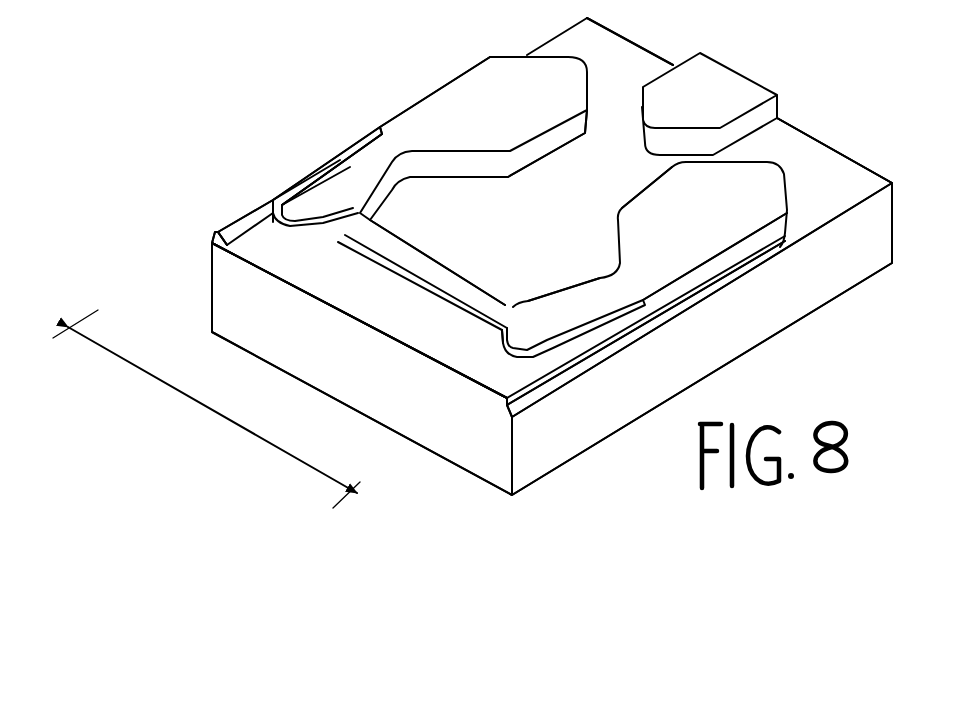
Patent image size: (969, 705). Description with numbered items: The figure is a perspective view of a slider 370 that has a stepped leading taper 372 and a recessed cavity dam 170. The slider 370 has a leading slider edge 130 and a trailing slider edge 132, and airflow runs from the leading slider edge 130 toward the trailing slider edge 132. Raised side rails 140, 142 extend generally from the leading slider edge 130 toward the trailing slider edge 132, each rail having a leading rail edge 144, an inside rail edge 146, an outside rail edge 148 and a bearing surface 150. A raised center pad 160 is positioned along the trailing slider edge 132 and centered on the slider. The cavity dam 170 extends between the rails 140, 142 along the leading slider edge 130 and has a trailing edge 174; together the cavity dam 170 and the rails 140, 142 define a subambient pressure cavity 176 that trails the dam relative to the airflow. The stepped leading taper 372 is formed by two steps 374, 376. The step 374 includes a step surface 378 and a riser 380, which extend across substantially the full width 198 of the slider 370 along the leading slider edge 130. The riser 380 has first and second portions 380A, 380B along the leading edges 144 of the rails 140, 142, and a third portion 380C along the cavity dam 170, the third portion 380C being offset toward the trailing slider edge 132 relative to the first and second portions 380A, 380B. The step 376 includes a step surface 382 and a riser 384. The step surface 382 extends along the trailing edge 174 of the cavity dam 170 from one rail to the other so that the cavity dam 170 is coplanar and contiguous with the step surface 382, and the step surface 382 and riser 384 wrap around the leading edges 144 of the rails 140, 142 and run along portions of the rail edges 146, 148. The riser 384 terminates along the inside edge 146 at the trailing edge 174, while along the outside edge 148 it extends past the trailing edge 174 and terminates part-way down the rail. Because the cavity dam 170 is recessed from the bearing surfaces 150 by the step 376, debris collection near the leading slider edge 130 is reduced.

The leading slider edge 130 is at (493, 473).
The trailing slider edge 132 is at (833, 150).
The raised side rail 140 is at (753, 208).
The raised side rail 142 is at (514, 78).
The leading rail edge 144 is at (288, 212).
The inside rail edge 146 is at (640, 193).
The outside rail edge 148 is at (417, 100).
The bearing surface 150 is at (463, 82).
The raised center pad 160 is at (715, 78).
The cavity dam 170 is at (392, 246).
The trailing edge of cavity dam 174 is at (432, 258).
The subambient pressure cavity 176 is at (578, 227).
The full width 198 is at (160, 379).
The slider 370 is at (287, 80).
The stepped leading taper 372 is at (222, 184).
The step 374 is at (226, 220).
The step 376 is at (262, 204).
The step surface 378 is at (250, 245).
The riser 380 is at (290, 247).
The first portion of riser 380A is at (477, 368).
The second portion of riser 380B is at (215, 236).
The third portion of riser 380C is at (423, 287).
The step surface 382 is at (293, 240).
The riser 384 is at (322, 232).